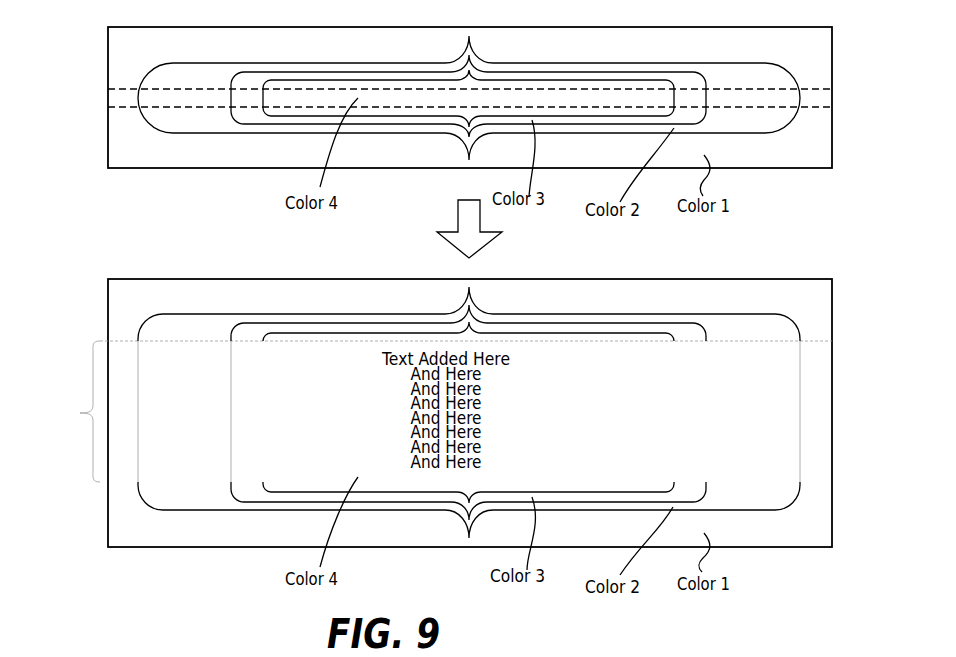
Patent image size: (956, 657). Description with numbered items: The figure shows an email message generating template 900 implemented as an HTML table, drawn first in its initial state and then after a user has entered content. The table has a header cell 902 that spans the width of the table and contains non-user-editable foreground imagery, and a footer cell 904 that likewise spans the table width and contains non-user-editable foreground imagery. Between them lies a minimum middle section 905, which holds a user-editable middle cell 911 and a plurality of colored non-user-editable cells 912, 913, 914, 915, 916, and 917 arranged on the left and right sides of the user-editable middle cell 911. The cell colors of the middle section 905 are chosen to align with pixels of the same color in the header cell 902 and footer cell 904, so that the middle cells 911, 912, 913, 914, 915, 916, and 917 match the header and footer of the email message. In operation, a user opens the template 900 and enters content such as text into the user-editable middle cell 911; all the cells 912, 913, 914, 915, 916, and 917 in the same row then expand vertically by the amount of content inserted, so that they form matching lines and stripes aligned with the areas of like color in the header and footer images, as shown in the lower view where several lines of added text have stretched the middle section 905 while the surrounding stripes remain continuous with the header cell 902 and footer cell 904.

The email message generating template 900 is at (108, 27).
The header cell 902 is at (108, 53).
The footer cell 904 is at (108, 150).
The middle section 905 is at (108, 97).
The user-editable middle cell 911 is at (295, 100).
The colored non-user-editable cell 912 is at (122, 350).
The colored non-user-editable cell 913 is at (185, 98).
The colored non-user-editable cell 914 is at (248, 357).
The colored non-user-editable cell 915 is at (683, 98).
The colored non-user-editable cell 916 is at (746, 98).
The colored non-user-editable cell 917 is at (816, 98).